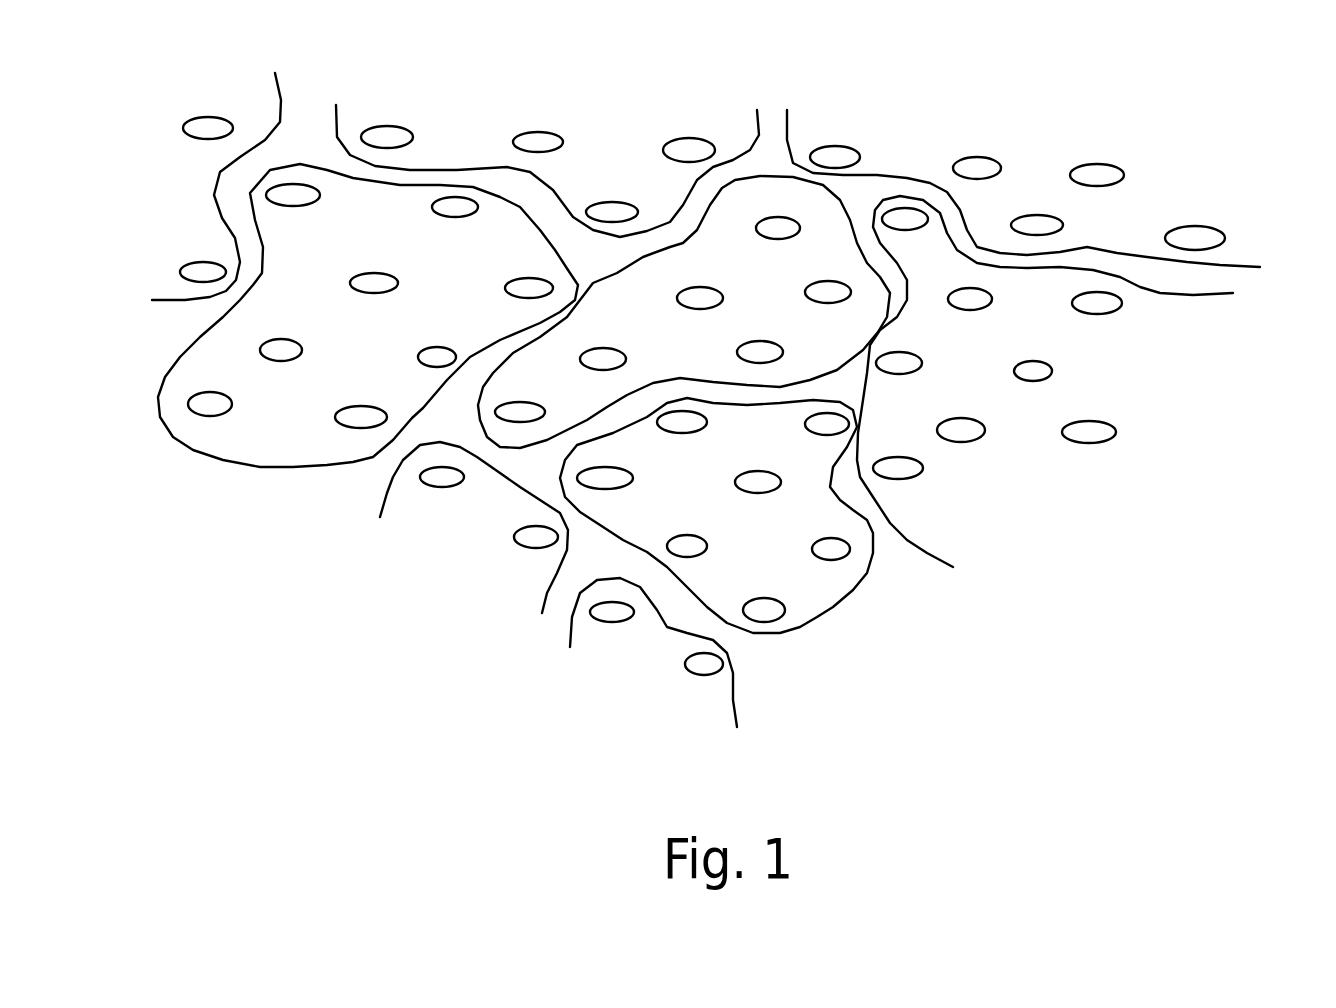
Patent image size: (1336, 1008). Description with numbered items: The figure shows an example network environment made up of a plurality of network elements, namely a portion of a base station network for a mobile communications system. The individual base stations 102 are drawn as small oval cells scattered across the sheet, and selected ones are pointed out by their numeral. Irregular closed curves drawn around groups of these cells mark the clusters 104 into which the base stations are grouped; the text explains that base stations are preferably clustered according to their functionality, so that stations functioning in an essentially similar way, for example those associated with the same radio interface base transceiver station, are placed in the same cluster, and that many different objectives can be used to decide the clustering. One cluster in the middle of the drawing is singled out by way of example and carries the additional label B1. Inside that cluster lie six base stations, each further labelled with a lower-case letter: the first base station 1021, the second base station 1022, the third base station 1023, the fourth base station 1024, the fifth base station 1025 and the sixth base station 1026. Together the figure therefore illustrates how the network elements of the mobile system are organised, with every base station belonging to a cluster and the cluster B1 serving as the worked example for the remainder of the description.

The base station 102 is at (702, 388).
The cluster 104 is at (719, 400).
The cluster B1 is at (684, 312).
The base station b1 1021 is at (544, 399).
The base station b2 1022 is at (629, 347).
The base station b3 1023 is at (717, 285).
The base station b4 1024 is at (786, 215).
The base station b5 1025 is at (770, 339).
The base station b6 1026 is at (823, 276).